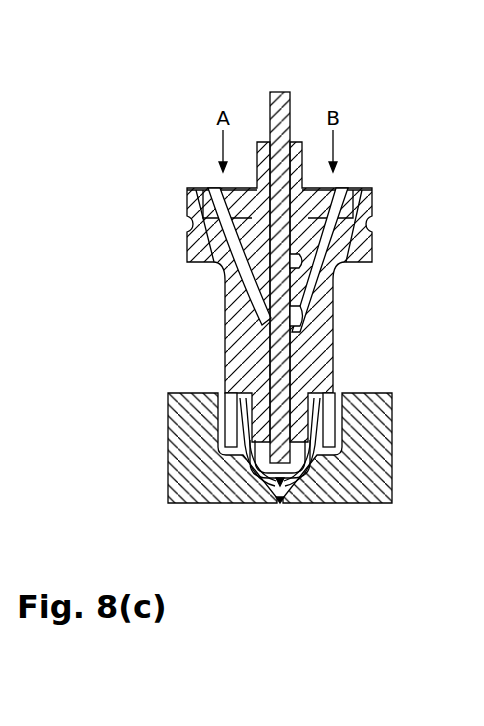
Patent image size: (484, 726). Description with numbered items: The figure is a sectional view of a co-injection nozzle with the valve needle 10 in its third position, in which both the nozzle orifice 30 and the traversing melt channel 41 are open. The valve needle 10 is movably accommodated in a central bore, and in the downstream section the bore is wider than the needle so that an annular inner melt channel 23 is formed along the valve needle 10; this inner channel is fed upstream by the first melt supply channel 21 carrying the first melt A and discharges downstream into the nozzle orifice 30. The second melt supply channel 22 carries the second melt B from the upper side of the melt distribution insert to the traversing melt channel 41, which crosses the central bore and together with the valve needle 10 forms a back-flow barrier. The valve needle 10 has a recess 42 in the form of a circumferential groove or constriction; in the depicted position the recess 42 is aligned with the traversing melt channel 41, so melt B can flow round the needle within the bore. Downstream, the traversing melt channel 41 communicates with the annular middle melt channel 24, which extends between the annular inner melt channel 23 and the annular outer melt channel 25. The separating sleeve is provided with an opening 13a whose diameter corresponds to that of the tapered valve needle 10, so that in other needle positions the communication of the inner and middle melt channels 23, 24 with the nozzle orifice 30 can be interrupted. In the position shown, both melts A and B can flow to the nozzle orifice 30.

The valve needle 10 is at (270, 92).
The first melt supply channel 21 is at (268, 315).
The second melt supply channel 22 is at (328, 205).
The traversing melt channel 41 is at (300, 257).
The recess 42 is at (288, 263).
The annular outer melt channel 25 is at (238, 435).
The annular middle melt channel 24 is at (250, 460).
The annular inner melt channel 23 is at (288, 445).
The opening 13a is at (312, 503).
The nozzle orifice 30 is at (279, 503).